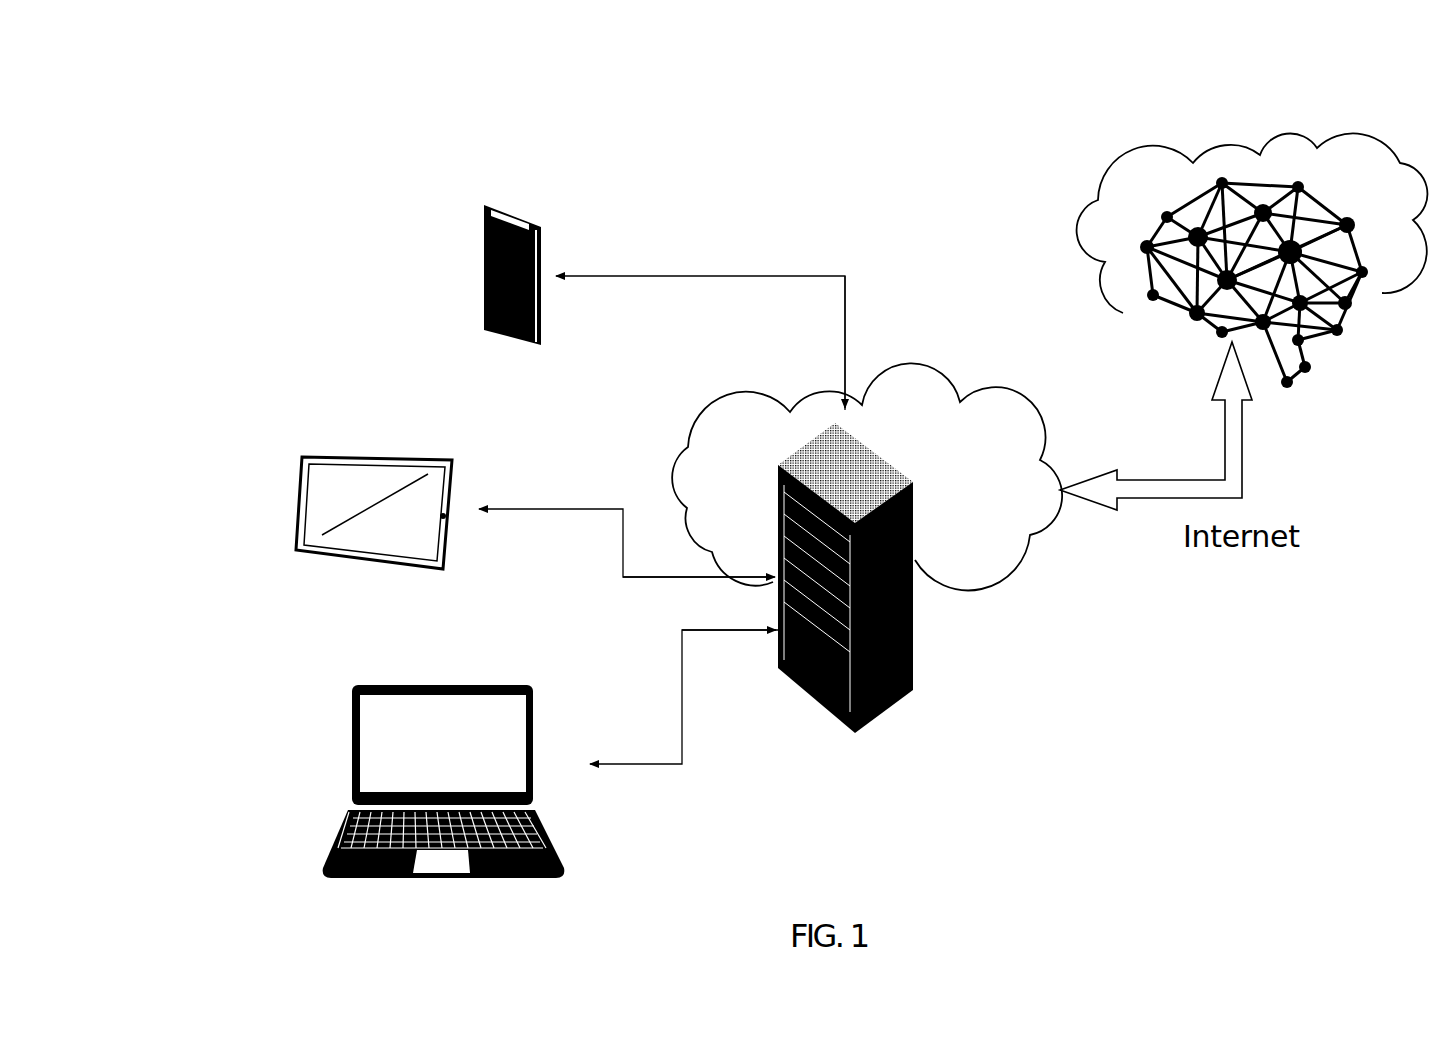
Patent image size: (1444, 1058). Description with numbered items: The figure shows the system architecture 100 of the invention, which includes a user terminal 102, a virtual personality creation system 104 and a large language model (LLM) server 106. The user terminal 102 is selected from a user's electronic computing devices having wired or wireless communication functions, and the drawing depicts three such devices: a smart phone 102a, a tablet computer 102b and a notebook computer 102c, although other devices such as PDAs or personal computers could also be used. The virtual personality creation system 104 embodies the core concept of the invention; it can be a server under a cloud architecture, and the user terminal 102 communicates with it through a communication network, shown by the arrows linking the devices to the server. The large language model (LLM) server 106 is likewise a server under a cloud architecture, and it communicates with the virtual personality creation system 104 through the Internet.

The system architecture 100 is at (360, 117).
The user terminal 102 is at (317, 203).
The smart phone 102a is at (508, 203).
The tablet computer 102b is at (350, 455).
The notebook computer 102c is at (538, 718).
The virtual personality creation system 104 is at (916, 634).
The large language model (LLM) server 106 is at (1243, 178).